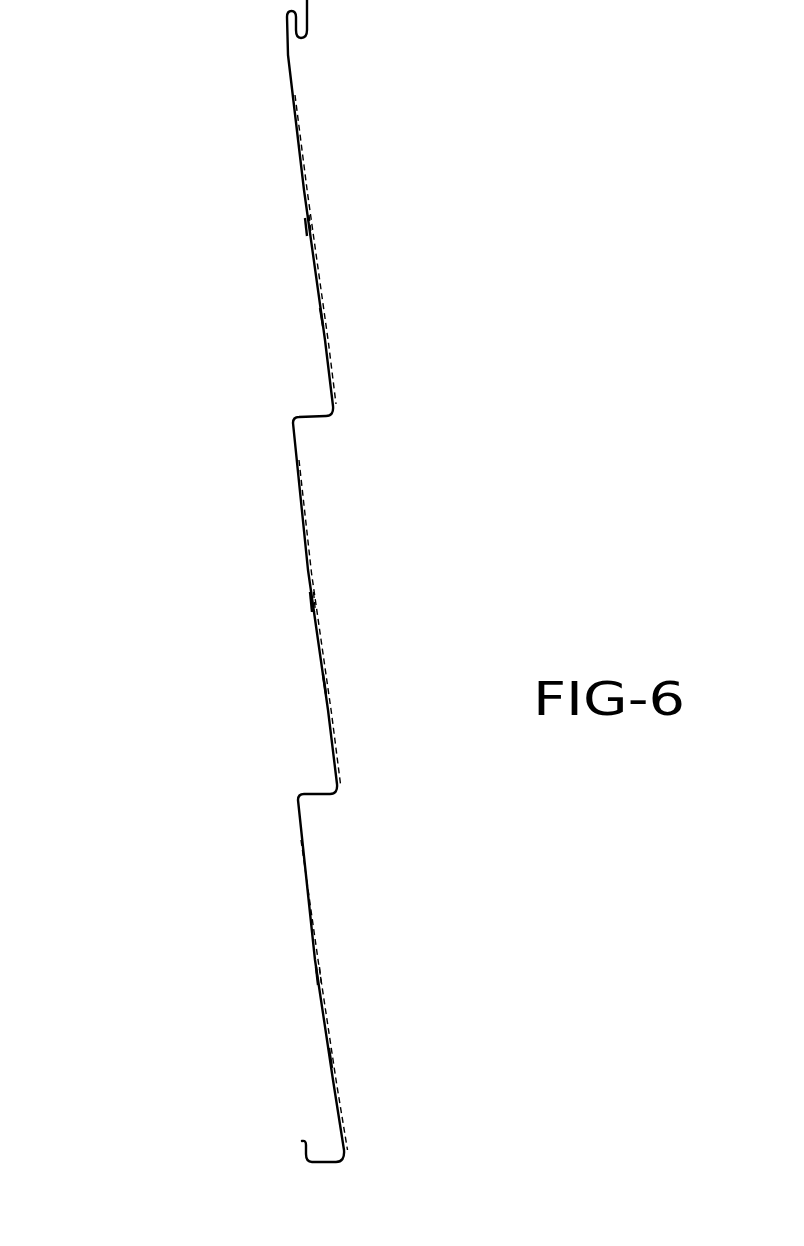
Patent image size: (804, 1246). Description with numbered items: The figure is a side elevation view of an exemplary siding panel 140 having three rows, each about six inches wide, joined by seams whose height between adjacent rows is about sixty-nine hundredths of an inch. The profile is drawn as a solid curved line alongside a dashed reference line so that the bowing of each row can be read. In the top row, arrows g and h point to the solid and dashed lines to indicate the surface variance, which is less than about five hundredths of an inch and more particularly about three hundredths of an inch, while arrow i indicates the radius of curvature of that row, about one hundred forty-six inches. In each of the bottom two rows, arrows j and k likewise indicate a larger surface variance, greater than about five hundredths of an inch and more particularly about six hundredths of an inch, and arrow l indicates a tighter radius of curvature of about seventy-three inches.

The siding panel 140 is at (83, 130).
The arrow g is at (291, 228).
The arrow h is at (331, 222).
The arrow i is at (338, 315).
The arrow j is at (299, 604).
The arrow k is at (329, 600).
The arrow l is at (341, 681).